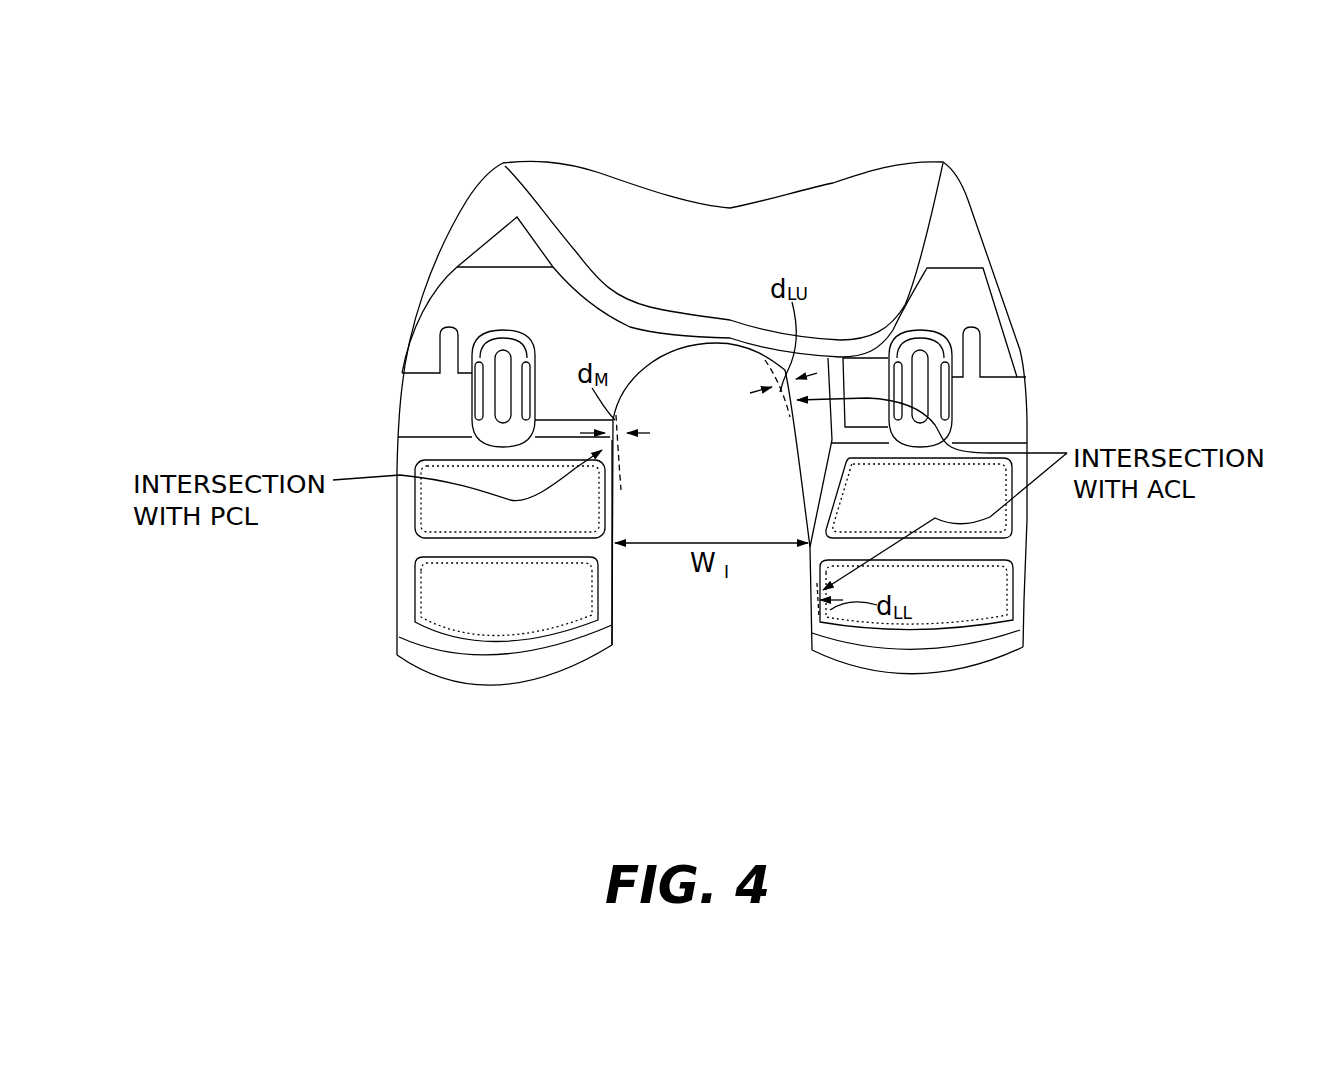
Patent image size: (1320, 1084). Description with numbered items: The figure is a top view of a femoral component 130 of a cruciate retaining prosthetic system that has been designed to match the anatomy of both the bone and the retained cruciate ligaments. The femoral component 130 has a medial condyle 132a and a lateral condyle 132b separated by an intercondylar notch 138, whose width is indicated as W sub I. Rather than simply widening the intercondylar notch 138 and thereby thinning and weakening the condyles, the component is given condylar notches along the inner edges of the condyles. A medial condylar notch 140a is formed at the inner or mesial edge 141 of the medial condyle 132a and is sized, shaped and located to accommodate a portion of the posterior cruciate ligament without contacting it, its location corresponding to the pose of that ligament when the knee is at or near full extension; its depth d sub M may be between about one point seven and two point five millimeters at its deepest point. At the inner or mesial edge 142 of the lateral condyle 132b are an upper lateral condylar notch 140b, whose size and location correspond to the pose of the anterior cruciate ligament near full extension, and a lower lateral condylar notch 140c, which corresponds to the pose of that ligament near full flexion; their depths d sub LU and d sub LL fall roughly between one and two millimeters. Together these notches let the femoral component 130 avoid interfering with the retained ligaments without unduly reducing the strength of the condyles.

The femoral component 130 is at (427, 182).
The medial condyle 132a is at (462, 675).
The lateral condyle 132b is at (987, 657).
The intercondylar notch 138 is at (711, 657).
The medial condylar notch 140a is at (622, 440).
The upper lateral condylar notch 140b is at (790, 400).
The lower lateral condylar notch 140c is at (817, 587).
The inner edge of medial condyle 141 is at (610, 590).
The inner edge of lateral condyle 142 is at (800, 490).